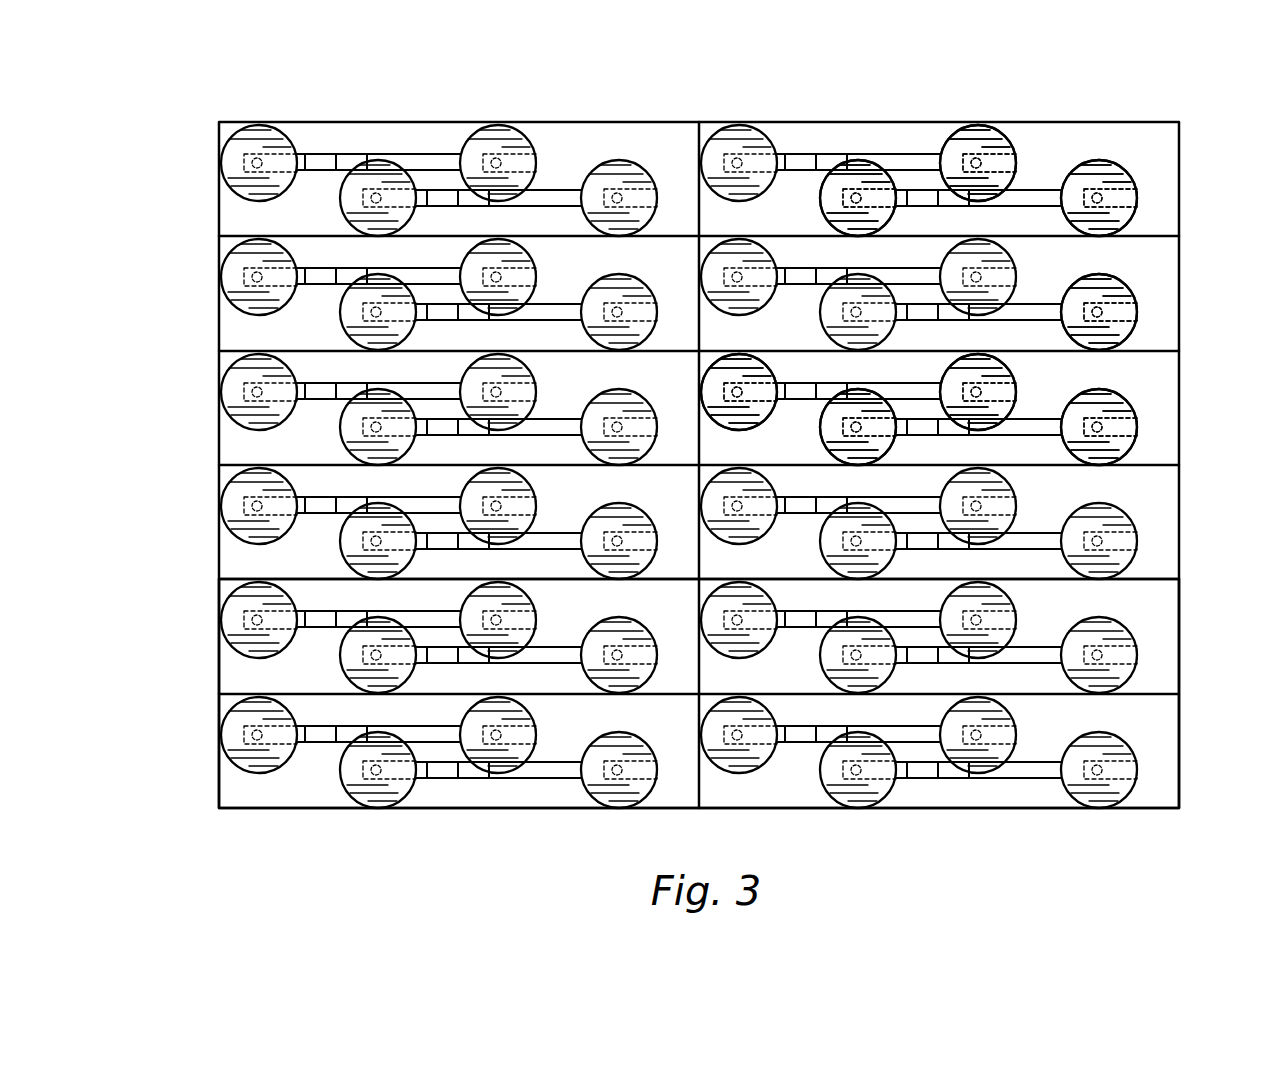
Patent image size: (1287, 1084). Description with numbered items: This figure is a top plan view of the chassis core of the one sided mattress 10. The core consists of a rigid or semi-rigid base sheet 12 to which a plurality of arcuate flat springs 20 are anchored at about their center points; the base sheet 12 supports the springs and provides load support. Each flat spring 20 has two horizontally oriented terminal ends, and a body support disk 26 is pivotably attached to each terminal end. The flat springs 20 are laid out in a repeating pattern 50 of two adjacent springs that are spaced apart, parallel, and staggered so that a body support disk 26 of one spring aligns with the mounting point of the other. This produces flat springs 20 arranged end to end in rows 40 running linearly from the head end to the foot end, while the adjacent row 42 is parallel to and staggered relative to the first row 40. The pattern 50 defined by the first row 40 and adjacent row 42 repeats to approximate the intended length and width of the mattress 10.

The one sided mattress 10 is at (178, 198).
The rigid or semi-rigid base sheet 12 is at (1145, 382).
The flat spring 20 is at (411, 154).
The body support disk 26 is at (860, 178).
The row 40 is at (682, 772).
The adjacent row 42 is at (565, 738).
The repeating pattern 50 is at (201, 618).